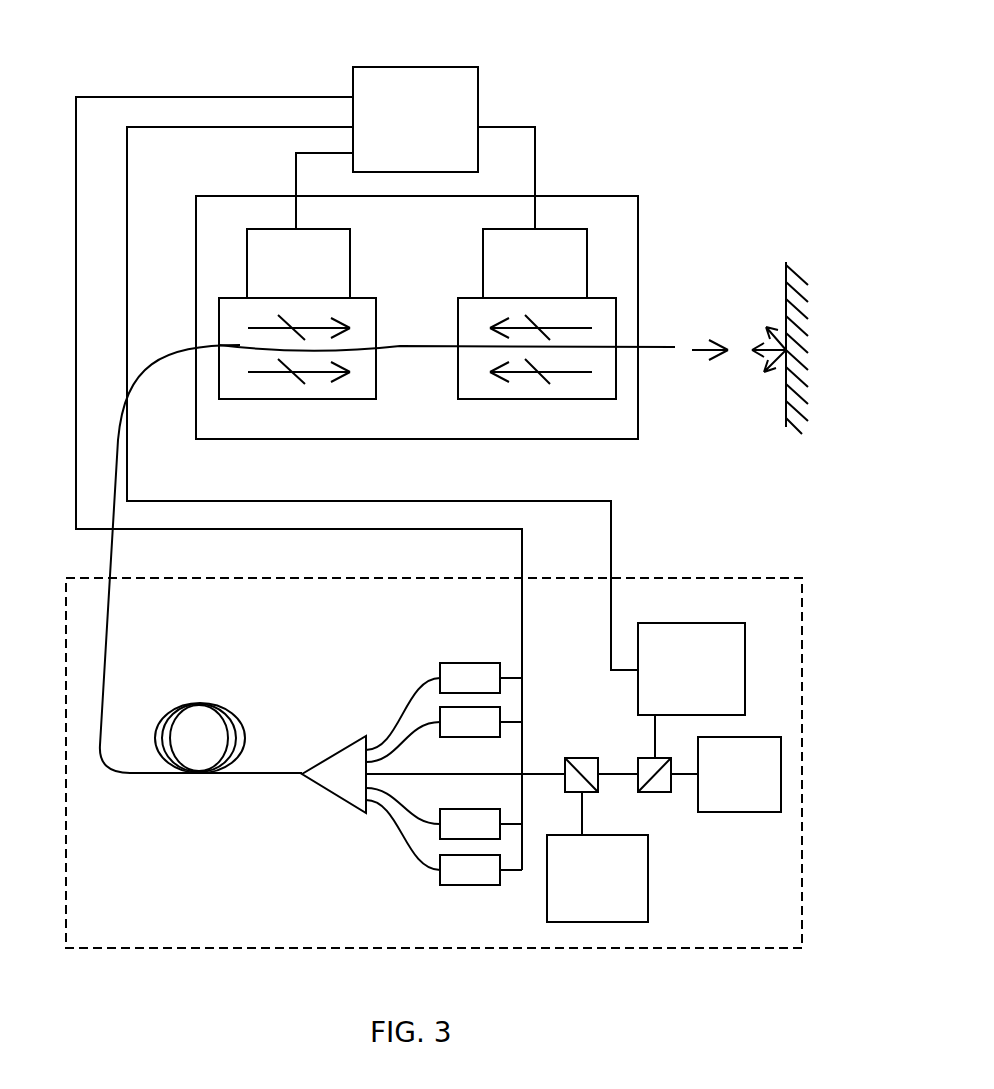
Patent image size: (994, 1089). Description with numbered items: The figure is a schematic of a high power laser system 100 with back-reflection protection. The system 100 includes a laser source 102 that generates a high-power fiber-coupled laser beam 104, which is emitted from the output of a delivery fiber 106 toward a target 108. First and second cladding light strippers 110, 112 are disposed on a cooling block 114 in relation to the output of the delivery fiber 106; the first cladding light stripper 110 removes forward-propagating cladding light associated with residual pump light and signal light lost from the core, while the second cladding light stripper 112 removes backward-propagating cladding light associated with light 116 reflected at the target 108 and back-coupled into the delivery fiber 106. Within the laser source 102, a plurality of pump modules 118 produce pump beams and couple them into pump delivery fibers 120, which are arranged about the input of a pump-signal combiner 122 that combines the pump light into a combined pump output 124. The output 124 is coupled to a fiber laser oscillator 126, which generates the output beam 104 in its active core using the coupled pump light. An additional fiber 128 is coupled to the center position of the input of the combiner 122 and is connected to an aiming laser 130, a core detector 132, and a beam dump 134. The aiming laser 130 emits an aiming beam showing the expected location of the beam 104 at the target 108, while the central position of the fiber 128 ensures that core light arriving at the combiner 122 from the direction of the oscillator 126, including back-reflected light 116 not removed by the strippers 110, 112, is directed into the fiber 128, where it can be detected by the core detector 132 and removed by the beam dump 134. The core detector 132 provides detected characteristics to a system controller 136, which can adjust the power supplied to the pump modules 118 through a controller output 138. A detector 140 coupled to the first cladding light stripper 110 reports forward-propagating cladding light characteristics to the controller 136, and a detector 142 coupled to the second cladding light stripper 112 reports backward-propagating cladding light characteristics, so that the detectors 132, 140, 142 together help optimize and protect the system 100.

The high power laser system 100 is at (730, 76).
The laser source 102 is at (163, 950).
The laser beam 104 is at (708, 348).
The delivery fiber 106 is at (658, 348).
The target 108 is at (786, 290).
The first cladding light stripper 110 is at (350, 388).
The second cladding light stripper 112 is at (585, 383).
The cooling block 114 is at (437, 429).
The reflected light 116 is at (764, 351).
The pump modules 118 is at (481, 774).
The pump delivery fibers 120 is at (413, 728).
The pump-signal combiner 122 is at (363, 785).
The combined pump output 124 is at (292, 778).
The fiber laser oscillator 126 is at (205, 667).
The additional fiber 128 is at (425, 773).
The aiming laser 130 is at (597, 840).
The core detector 132 is at (691, 707).
The beam dump 134 is at (739, 774).
The system controller 136 is at (415, 119).
The controller output 138 is at (205, 97).
The detector 140 is at (298, 263).
The detector 142 is at (535, 263).